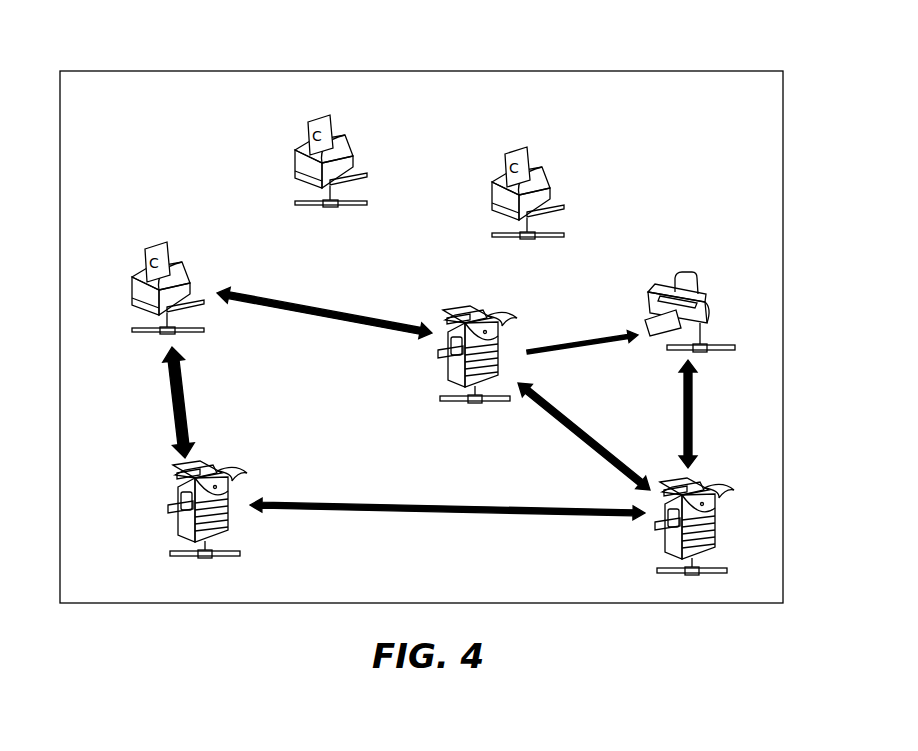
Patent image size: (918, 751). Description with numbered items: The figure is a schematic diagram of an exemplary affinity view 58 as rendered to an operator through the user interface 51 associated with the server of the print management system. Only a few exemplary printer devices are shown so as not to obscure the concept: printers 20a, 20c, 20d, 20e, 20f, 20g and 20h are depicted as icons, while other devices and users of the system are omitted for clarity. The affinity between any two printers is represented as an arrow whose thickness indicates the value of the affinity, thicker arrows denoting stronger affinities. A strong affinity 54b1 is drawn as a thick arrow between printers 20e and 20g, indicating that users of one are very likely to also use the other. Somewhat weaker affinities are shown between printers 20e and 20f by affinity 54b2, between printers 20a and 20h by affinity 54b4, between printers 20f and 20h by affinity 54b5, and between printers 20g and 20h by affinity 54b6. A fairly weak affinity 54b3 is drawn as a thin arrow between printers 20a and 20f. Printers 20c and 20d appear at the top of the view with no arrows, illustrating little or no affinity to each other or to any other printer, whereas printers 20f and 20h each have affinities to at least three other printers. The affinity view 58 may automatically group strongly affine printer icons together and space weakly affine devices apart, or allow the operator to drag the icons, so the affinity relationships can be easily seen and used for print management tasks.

The user interface 51 is at (132, 44).
The affinity view 58 is at (727, 71).
The printer device 20a is at (646, 304).
The printer device 20c is at (295, 165).
The printer device 20d is at (493, 193).
The printer device 20e is at (133, 290).
The printer device 20f is at (448, 378).
The printer device 20g is at (178, 530).
The printer device 20h is at (664, 546).
The affinity 54b1 is at (168, 406).
The affinity 54b2 is at (328, 311).
The affinity 54b3 is at (598, 345).
The affinity 54b4 is at (696, 407).
The affinity 54b5 is at (590, 450).
The affinity 54b6 is at (398, 511).